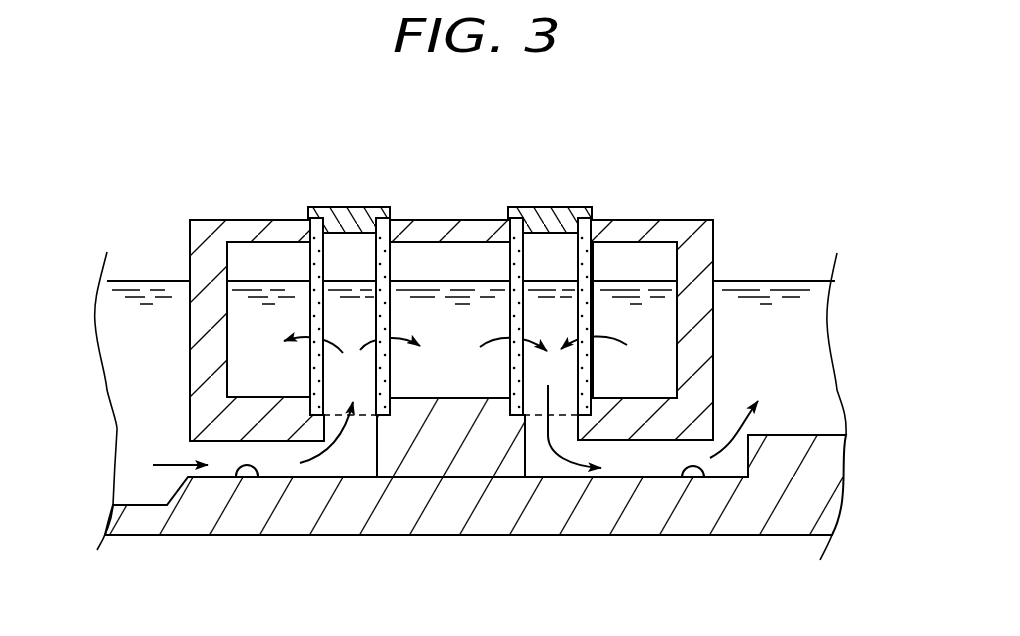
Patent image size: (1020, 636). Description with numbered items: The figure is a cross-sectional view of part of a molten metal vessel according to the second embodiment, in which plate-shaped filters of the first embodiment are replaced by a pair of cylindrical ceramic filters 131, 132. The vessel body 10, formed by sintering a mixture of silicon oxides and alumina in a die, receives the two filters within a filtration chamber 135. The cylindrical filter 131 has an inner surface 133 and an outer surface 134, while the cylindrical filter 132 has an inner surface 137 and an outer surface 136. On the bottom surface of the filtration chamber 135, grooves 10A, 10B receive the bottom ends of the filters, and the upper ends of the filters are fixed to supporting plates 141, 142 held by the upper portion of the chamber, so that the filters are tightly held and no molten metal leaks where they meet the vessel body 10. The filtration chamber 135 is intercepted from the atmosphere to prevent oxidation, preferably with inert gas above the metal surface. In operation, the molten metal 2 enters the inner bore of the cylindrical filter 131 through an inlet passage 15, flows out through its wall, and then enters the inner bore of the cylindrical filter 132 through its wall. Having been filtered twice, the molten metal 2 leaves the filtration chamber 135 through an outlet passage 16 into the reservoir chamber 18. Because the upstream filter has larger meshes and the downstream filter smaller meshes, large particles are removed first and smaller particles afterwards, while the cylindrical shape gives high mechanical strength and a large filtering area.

The molten metal 2 is at (147, 333).
The vessel body 10 is at (497, 331).
The groove 10A is at (317, 420).
The groove 10B is at (510, 417).
The inlet passage 15 is at (236, 477).
The outlet passage 16 is at (704, 477).
The reservoir chamber 18 is at (798, 256).
The cylindrical ceramic filter 131 is at (380, 235).
The cylindrical ceramic filter 132 is at (590, 237).
The inner surface 133 is at (375, 322).
The outer surface 134 is at (390, 318).
The filtration chamber 135 is at (483, 257).
The outer surface 136 is at (597, 320).
The inner surface 137 is at (577, 327).
The supporting plate 141 is at (351, 205).
The supporting plate 142 is at (530, 220).